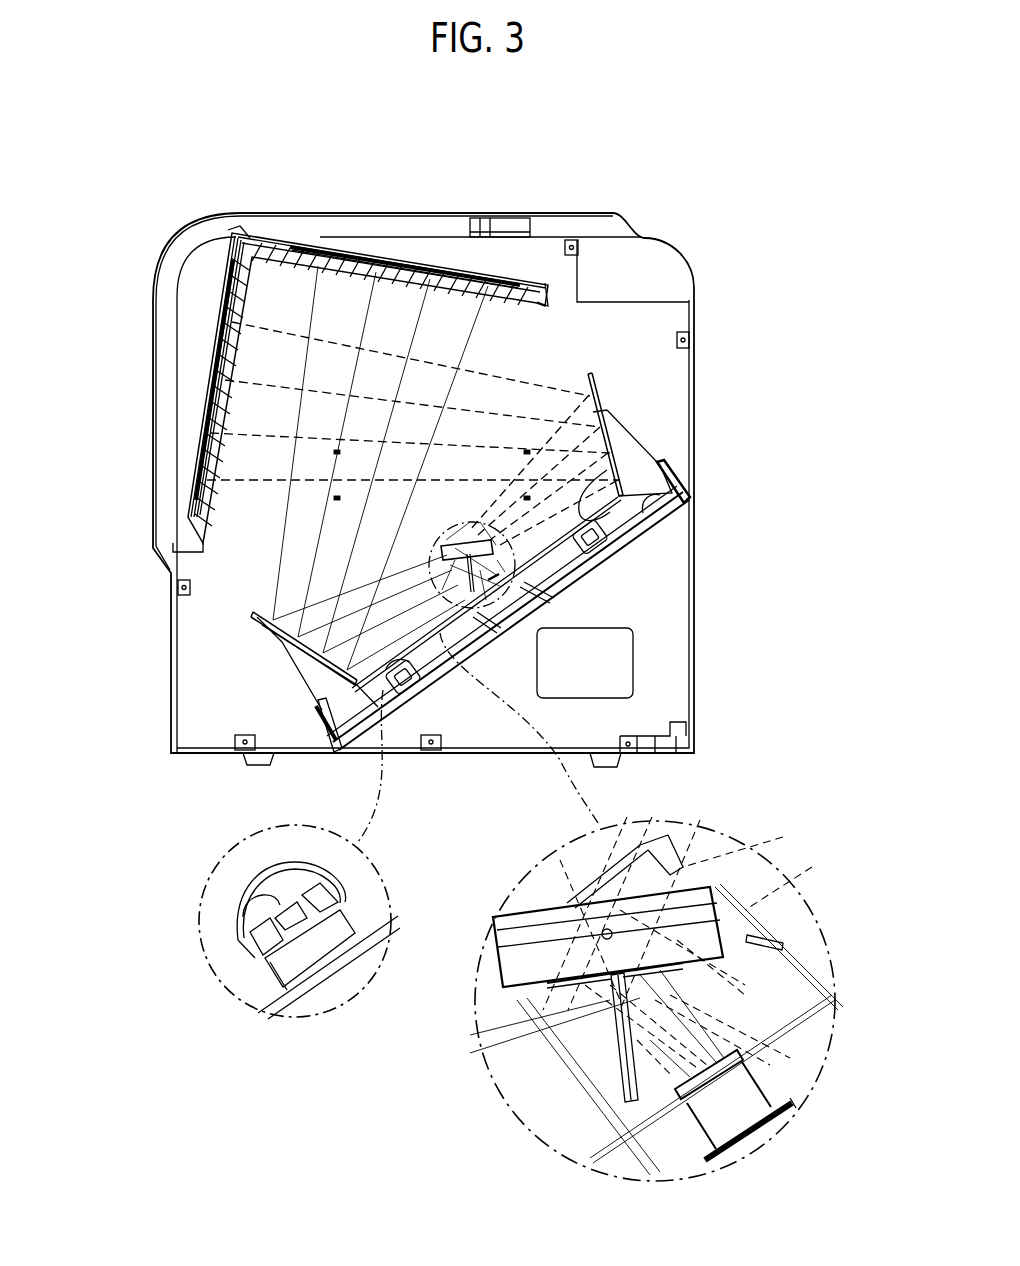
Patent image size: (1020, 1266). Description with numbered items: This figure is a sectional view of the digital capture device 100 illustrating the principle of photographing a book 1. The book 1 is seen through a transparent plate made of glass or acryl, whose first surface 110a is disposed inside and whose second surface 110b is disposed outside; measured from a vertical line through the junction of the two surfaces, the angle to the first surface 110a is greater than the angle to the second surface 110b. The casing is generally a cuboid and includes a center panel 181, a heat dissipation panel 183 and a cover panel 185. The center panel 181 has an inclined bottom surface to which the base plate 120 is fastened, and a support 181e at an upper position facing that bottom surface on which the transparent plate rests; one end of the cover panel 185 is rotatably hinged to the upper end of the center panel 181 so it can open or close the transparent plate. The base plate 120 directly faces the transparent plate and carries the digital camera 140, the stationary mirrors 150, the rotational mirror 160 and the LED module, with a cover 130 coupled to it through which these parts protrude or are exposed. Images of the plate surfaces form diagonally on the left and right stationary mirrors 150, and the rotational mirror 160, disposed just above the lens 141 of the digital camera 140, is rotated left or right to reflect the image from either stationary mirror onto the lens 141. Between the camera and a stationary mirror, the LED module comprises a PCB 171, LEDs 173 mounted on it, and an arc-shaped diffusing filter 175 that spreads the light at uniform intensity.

The digital capture device 100 is at (204, 126).
The book 1 is at (285, 232).
The first surface 110a is at (400, 255).
The second surface 110b is at (207, 453).
The support 181e is at (530, 280).
The cover panel 185 is at (152, 352).
The stationary mirrors 150 is at (593, 380).
The center panel 181 is at (694, 408).
The cover 130 is at (677, 470).
The base plate 120 is at (690, 500).
The heat dissipation panel 183 is at (694, 687).
The diffusing filter 175 is at (247, 895).
The LEDs 173 is at (245, 898).
The PCB 171 is at (300, 923).
The rotational mirror 160 is at (537, 917).
The lens 141 is at (710, 1053).
The digital camera 140 is at (737, 1112).